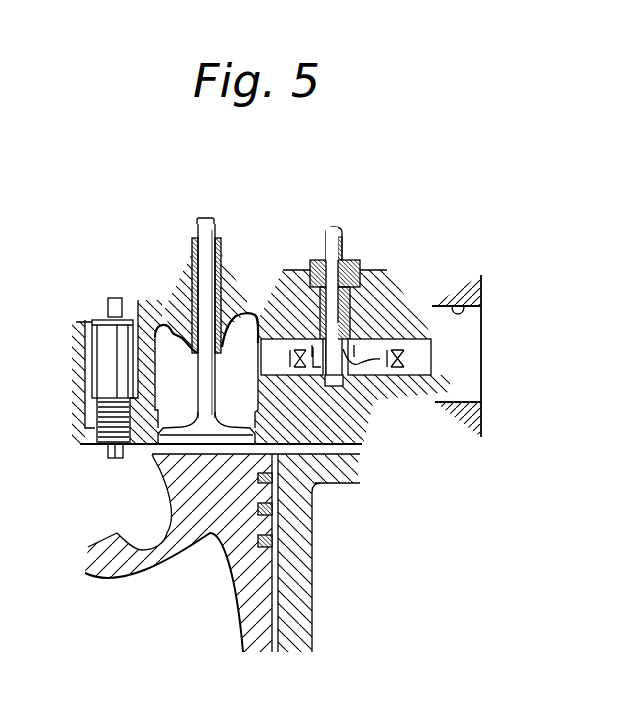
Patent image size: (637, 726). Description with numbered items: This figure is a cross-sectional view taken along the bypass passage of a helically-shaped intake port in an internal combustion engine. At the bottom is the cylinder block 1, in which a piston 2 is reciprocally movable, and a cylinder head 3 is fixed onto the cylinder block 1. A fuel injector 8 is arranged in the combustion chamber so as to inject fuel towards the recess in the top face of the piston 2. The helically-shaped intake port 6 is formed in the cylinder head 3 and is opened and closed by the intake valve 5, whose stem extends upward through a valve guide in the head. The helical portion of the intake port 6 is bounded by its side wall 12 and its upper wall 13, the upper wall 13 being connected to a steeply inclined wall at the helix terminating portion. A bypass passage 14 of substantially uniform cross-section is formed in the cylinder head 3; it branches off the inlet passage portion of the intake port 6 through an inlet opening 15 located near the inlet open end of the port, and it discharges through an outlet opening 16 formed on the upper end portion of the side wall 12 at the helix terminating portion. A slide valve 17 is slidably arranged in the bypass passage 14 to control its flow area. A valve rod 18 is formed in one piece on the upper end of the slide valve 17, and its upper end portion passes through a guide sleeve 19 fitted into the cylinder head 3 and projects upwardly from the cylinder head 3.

The cylinder block 1 is at (297, 588).
The piston 2 is at (152, 562).
The cylinder head 3 is at (168, 324).
The intake valve 5 is at (212, 370).
The intake port 6 is at (462, 307).
The fuel injector 8 is at (103, 340).
The side wall 12 is at (143, 317).
The upper wall 13 is at (163, 316).
The bypass passage 14 is at (372, 375).
The inlet opening 15 is at (413, 339).
The outlet opening 16 is at (261, 358).
The slide valve 17 is at (346, 378).
The valve rod 18 is at (346, 237).
The guide sleeve 19 is at (360, 262).